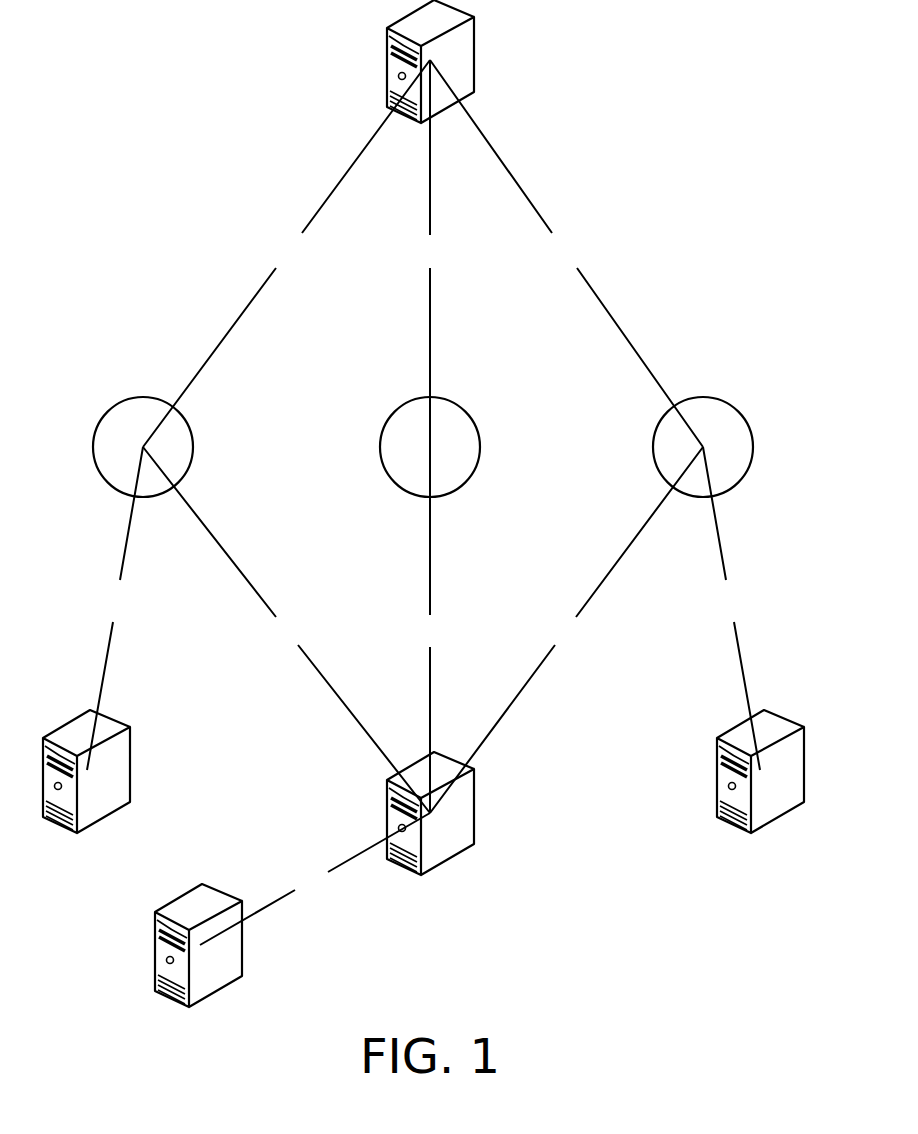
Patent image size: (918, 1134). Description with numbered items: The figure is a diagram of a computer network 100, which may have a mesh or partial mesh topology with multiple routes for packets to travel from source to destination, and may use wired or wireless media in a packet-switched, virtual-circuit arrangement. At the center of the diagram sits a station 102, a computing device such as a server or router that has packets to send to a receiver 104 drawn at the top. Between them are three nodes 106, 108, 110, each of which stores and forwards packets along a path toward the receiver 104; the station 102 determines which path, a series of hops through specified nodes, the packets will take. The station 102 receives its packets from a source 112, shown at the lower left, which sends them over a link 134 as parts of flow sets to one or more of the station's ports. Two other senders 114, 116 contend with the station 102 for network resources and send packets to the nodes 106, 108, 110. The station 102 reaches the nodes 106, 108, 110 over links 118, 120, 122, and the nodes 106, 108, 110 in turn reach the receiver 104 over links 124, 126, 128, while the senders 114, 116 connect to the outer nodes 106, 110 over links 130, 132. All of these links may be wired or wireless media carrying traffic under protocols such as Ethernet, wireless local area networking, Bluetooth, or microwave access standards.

The computer network 100 is at (243, 185).
The station 102 is at (430, 842).
The receiver 104 is at (430, 89).
The node 106 is at (143, 447).
The node 108 is at (430, 447).
The node 110 is at (703, 447).
The source 112 is at (198, 973).
The sender 114 is at (86, 798).
The sender 116 is at (760, 798).
The link 118 is at (286, 630).
The link 120 is at (430, 630).
The link 122 is at (566, 630).
The link 124 is at (286, 253).
The link 126 is at (430, 253).
The link 128 is at (566, 253).
The link 130 is at (115, 608).
The link 132 is at (731, 608).
The link 134 is at (315, 879).